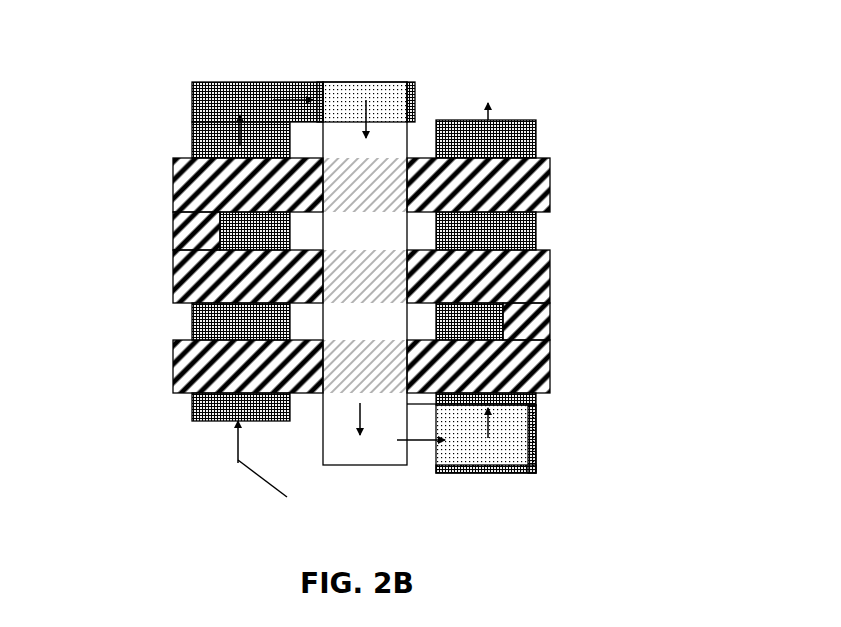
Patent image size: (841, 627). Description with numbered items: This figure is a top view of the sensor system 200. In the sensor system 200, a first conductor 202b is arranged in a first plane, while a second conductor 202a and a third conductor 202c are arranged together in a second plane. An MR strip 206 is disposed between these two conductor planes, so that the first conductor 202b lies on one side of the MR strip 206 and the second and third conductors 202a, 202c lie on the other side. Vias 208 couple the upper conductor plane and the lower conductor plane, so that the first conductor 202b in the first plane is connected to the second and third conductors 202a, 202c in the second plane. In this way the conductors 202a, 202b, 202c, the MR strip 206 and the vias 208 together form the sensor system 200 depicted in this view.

The sensor system 200 is at (388, 271).
The second conductor 202a is at (195, 422).
The first conductor 202b is at (350, 100).
The third conductor 202c is at (510, 120).
The MR strip 206 is at (173, 177).
The vias 208 is at (410, 82).